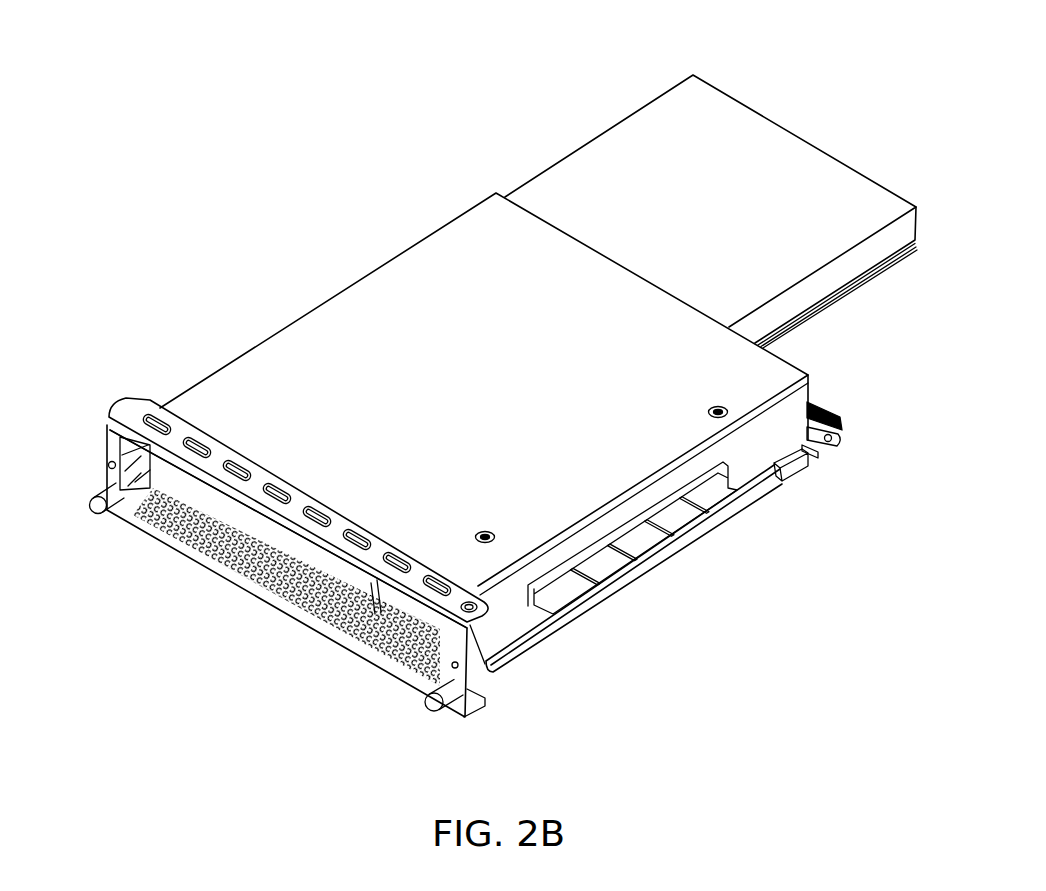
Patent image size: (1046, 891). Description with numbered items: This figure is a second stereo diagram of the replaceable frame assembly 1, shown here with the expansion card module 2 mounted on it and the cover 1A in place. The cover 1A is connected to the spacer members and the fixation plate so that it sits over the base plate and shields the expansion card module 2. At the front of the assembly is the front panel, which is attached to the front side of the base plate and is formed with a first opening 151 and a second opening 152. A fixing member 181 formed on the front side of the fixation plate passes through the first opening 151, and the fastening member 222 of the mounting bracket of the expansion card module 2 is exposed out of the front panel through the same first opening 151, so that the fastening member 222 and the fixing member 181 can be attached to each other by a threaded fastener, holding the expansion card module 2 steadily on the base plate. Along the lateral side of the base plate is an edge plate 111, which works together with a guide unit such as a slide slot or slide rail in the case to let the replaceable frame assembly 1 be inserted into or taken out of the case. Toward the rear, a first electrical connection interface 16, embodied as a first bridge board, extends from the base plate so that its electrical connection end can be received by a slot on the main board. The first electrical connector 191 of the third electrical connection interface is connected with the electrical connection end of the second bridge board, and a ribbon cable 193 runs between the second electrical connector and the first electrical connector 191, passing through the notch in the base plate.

The replaceable frame assembly 1 is at (231, 104).
The cover 1A is at (312, 323).
The expansion card module 2 is at (935, 253).
The first electrical connection interface 16 is at (838, 443).
The edge plate 111 is at (790, 487).
The first opening 151 is at (105, 423).
The second opening 152 is at (320, 560).
The fixing member 181 is at (111, 464).
The first electrical connector 191 is at (733, 482).
The ribbon cable 193 is at (677, 518).
The fastening member 222 is at (185, 430).